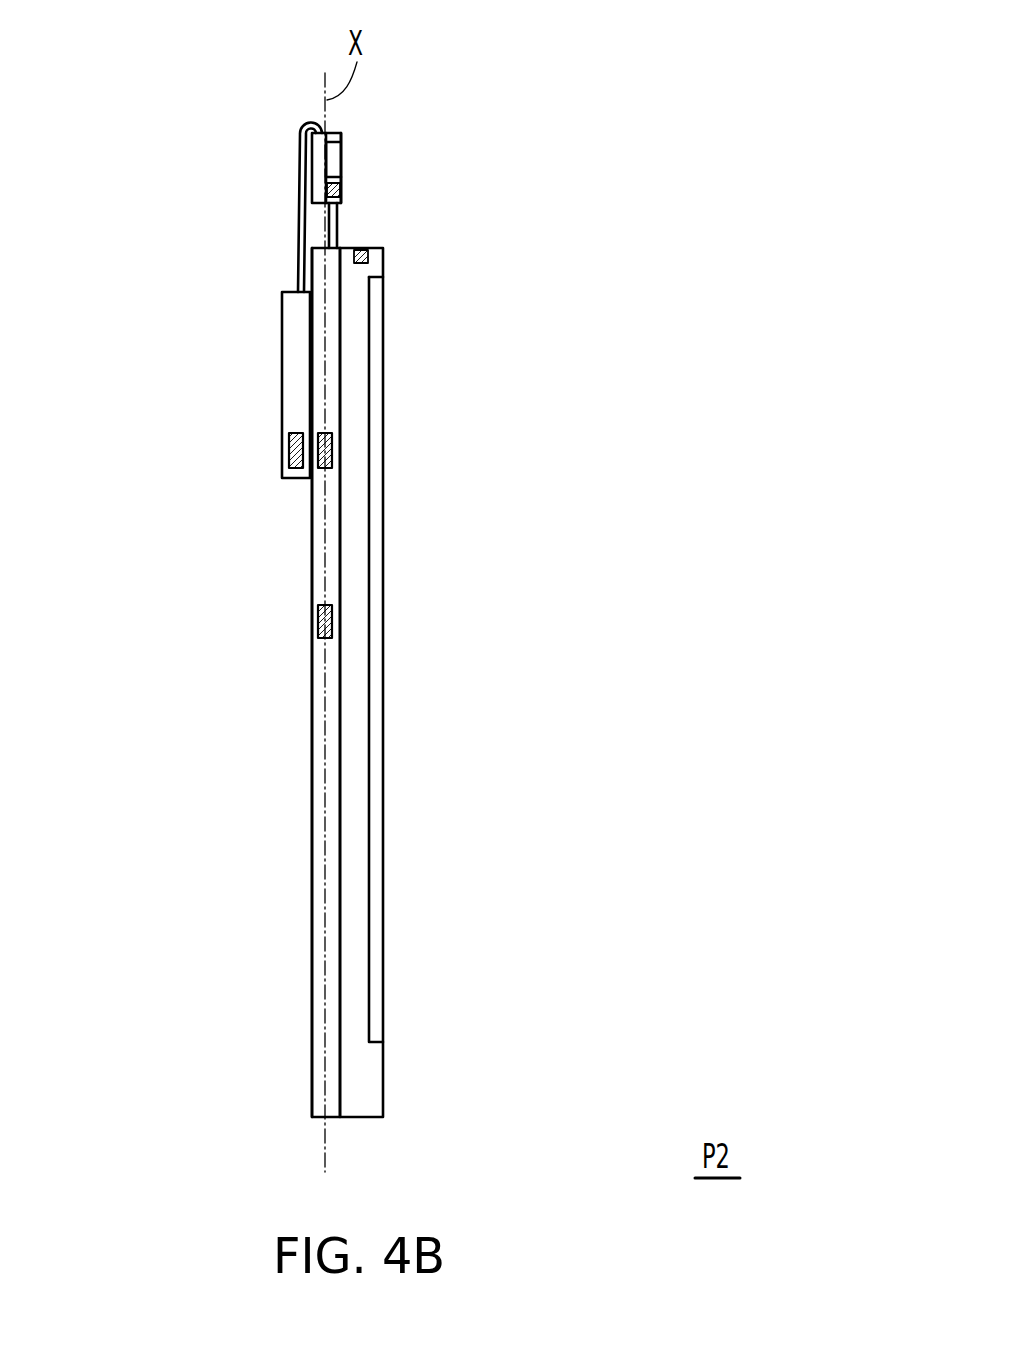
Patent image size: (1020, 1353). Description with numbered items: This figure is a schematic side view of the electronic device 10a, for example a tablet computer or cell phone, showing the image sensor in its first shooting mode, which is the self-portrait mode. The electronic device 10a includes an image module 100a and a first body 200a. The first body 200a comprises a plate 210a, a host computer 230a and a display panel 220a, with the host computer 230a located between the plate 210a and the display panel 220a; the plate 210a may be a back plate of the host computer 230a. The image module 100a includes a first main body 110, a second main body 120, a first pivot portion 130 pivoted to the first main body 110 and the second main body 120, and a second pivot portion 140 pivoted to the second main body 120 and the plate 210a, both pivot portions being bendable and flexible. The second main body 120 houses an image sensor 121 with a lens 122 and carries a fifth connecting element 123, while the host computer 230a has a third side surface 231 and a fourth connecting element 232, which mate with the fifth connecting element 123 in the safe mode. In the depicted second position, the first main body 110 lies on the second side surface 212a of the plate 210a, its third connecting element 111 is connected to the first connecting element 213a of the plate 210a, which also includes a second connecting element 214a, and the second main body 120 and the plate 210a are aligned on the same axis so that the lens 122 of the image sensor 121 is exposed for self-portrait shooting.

The electronic device 10a is at (438, 1130).
The image module 100a is at (268, 197).
The first main body 110 is at (295, 368).
The third connecting element 111 is at (295, 448).
The second main body 120 is at (315, 152).
The image sensor 121 is at (333, 168).
The lens 122 is at (342, 153).
The fifth connecting element 123 is at (333, 193).
The first pivot portion 130 is at (303, 272).
The second pivot portion 140 is at (332, 228).
The first body 200a is at (210, 748).
The plate 210a is at (318, 763).
The second side surface 212a is at (310, 702).
The first connecting element 213a is at (323, 460).
The second connecting element 214a is at (323, 622).
The display panel 220a is at (377, 875).
The host computer 230a is at (355, 818).
The third side surface 231 is at (375, 243).
The fourth connecting element 232 is at (359, 263).